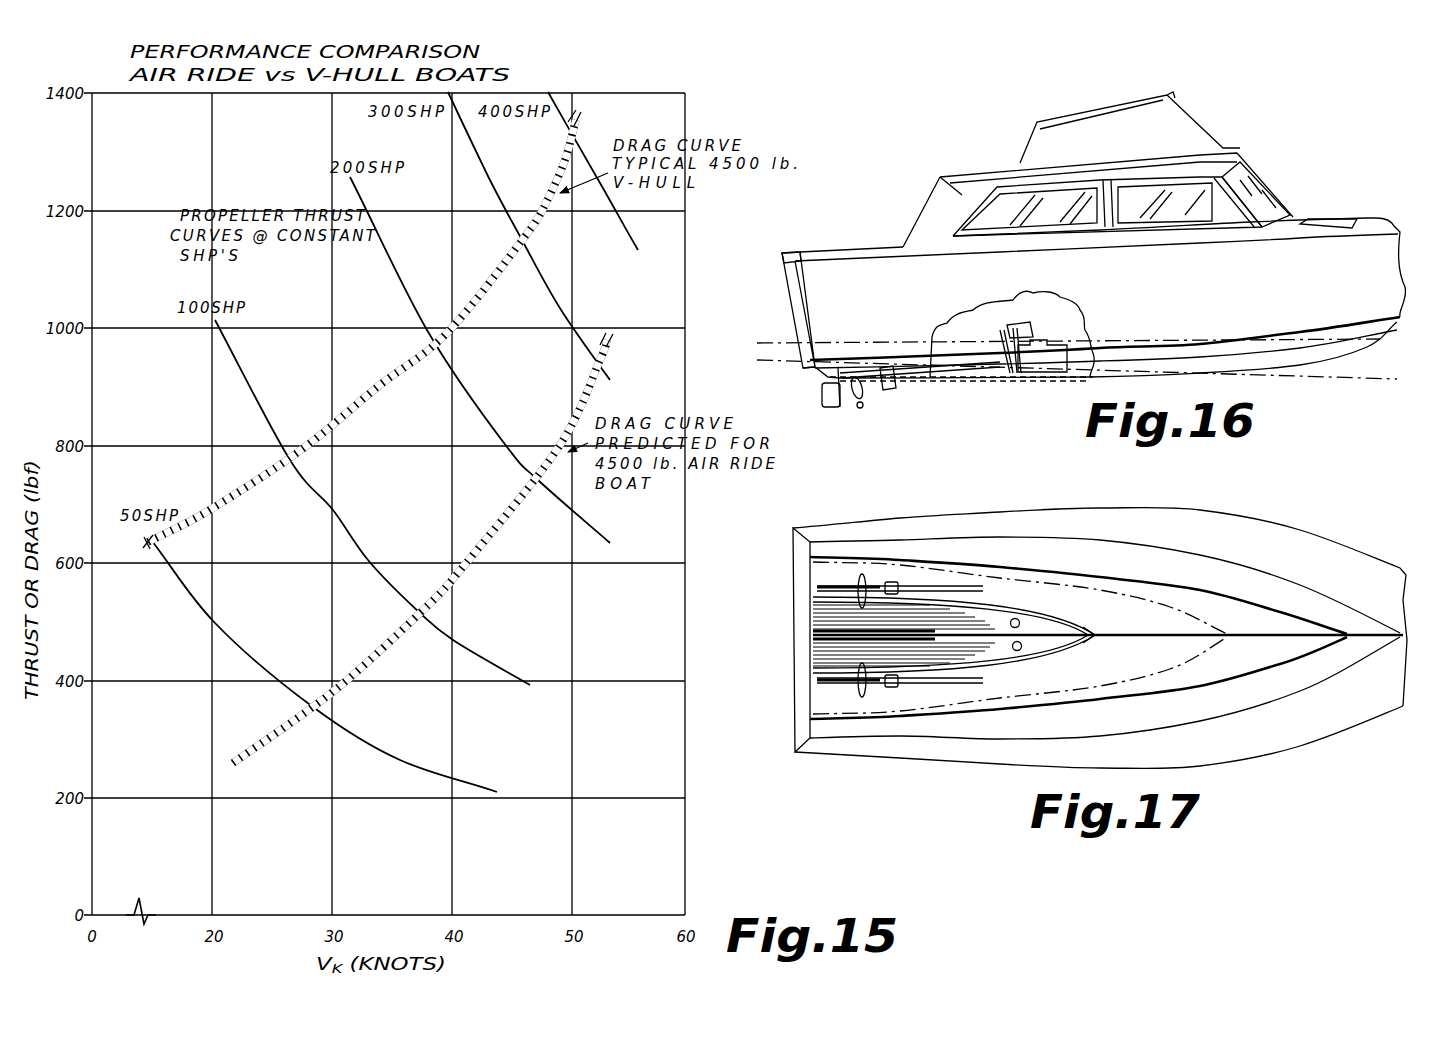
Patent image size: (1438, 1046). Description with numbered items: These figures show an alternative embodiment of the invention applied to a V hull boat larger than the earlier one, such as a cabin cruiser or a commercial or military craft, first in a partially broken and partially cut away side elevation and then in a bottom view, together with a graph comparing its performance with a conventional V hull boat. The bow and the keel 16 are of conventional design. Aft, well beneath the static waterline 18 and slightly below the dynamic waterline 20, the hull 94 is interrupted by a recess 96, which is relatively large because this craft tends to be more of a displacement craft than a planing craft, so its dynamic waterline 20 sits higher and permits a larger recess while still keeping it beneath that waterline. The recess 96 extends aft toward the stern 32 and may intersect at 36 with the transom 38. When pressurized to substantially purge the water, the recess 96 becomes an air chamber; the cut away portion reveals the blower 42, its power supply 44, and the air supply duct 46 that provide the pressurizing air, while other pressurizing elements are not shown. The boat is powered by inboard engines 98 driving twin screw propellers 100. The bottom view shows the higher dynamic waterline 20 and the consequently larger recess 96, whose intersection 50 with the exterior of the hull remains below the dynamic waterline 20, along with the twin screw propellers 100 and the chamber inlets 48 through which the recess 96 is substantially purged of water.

In FIG. 16, the keel 16 is at (1362, 346).
In FIG. 16, the static waterline 18 is at (1396, 331).
In FIG. 16, the dynamic waterline 20 is at (1385, 379).
In FIG. 17, the dynamic waterline 20 is at (1219, 629).
In FIG. 16, the stern 32 is at (790, 320).
In FIG. 16, the intersection of recess with transom 36 is at (806, 366).
In FIG. 16, the transom 38 is at (794, 291).
In FIG. 16, the blower 42 is at (1022, 325).
In FIG. 16, the power supply 44 is at (1000, 338).
In FIG. 16, the air supply duct 46 is at (1004, 359).
In FIG. 17, the chamber inlets 48 is at (1019, 619).
In FIG. 17, the intersection of recess with hull exterior 50 is at (1097, 631).
In FIG. 16, the hull 94 is at (1206, 297).
In FIG. 16, the recess 96 is at (995, 380).
In FIG. 17, the recess 96 is at (1042, 622).
In FIG. 16, the inboard engines 98 is at (1047, 362).
In FIG. 16, the twin screw propellers 100 is at (863, 407).
In FIG. 17, the twin screw propellers 100 is at (857, 581).